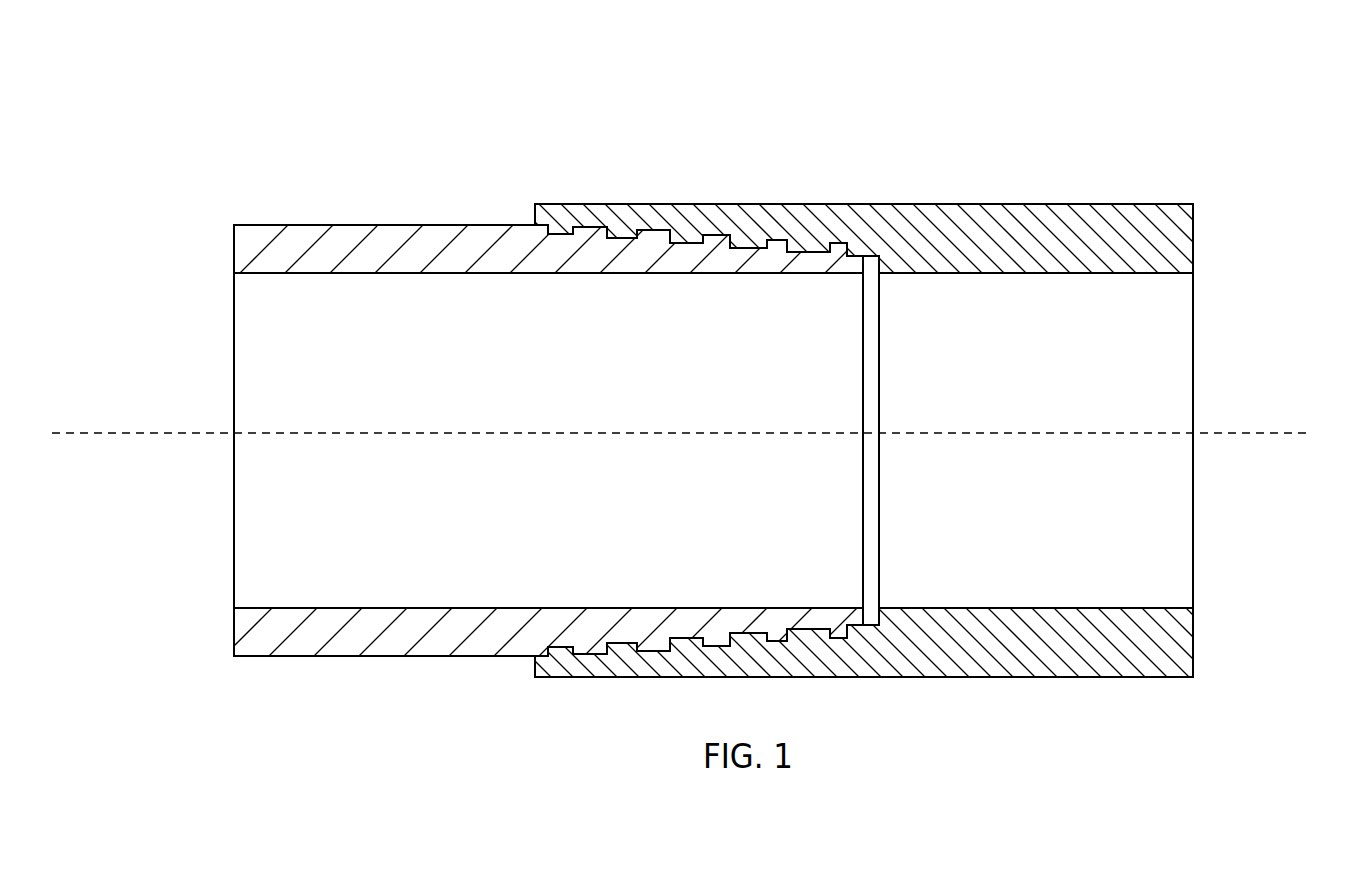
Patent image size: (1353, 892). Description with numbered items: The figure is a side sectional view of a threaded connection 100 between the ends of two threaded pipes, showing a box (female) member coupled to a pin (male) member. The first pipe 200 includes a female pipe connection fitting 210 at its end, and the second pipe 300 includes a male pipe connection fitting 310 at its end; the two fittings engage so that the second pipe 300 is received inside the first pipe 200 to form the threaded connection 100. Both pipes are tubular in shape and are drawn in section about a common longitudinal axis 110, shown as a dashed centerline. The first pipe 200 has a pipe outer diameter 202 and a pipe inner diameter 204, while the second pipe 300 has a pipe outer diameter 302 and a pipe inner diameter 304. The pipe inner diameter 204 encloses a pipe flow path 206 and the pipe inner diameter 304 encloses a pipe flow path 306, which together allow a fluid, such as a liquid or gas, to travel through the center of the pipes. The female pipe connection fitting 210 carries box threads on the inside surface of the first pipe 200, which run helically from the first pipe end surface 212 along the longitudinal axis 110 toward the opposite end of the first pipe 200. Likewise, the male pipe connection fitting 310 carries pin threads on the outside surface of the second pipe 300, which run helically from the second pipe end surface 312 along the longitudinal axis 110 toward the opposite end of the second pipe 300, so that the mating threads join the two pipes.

The threaded connection 100 is at (703, 420).
The longitudinal axis 110 is at (1252, 433).
The first pipe 200 is at (1075, 199).
The pipe outer diameter 202 is at (1040, 678).
The pipe inner diameter 204 is at (1028, 273).
The pipe flow path 206 is at (1062, 394).
The female pipe connection fitting 210 is at (617, 192).
The first pipe end surface 212 is at (535, 222).
The second pipe 300 is at (400, 666).
The pipe outer diameter 302 is at (356, 225).
The pipe inner diameter 304 is at (420, 275).
The pipe flow path 306 is at (537, 539).
The male pipe connection fitting 310 is at (618, 287).
The second pipe end surface 312 is at (873, 612).